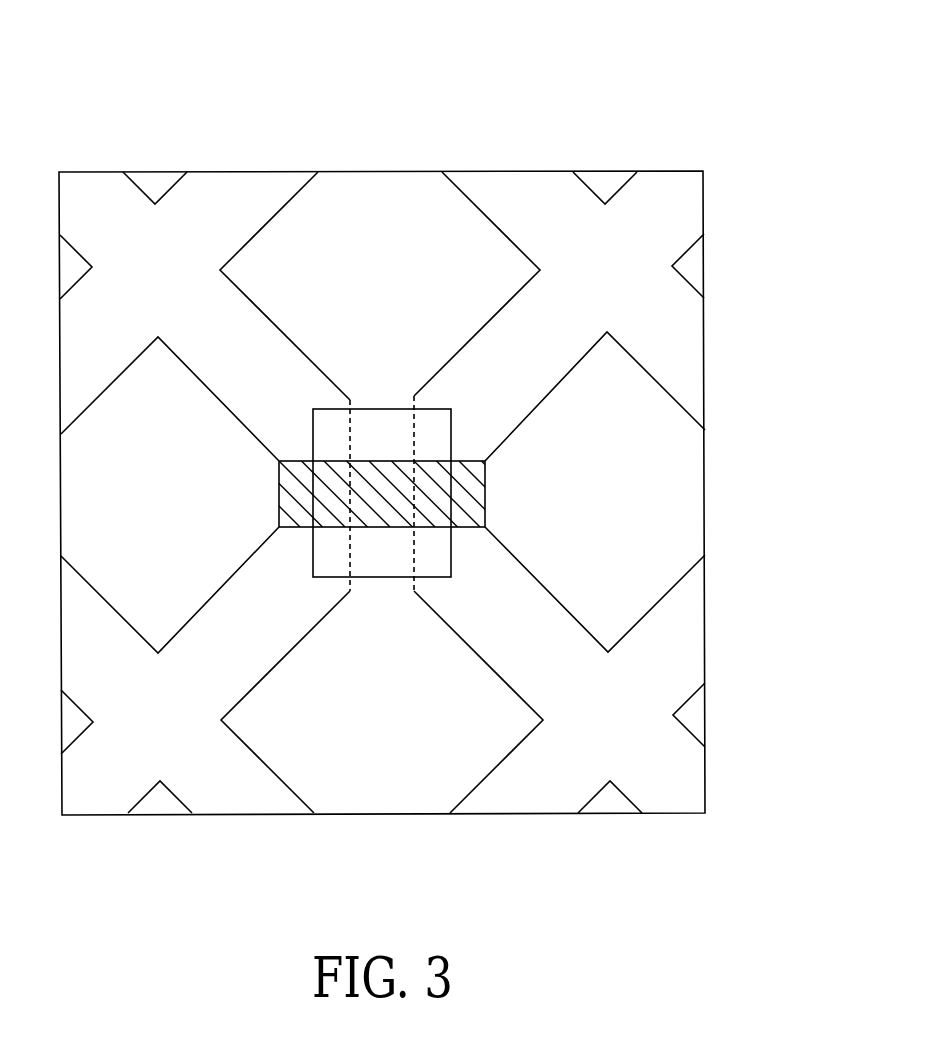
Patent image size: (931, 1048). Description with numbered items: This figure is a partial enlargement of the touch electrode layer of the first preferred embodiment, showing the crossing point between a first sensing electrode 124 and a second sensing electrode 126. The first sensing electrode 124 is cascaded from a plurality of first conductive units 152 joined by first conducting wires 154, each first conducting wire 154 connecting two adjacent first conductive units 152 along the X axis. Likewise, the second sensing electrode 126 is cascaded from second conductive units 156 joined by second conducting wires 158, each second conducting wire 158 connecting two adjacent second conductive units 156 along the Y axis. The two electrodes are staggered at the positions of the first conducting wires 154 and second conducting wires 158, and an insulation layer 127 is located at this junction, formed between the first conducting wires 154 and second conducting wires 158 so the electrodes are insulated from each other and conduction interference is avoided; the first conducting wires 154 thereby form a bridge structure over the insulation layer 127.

The first sensing electrode 124 is at (456, 492).
The second sensing electrode 126 is at (377, 298).
The insulation layer 127 is at (440, 555).
The first conductive unit 152 is at (670, 457).
The first conducting wire 154 is at (485, 488).
The second conductive unit 156 is at (348, 217).
The second conducting wire 158 is at (382, 430).